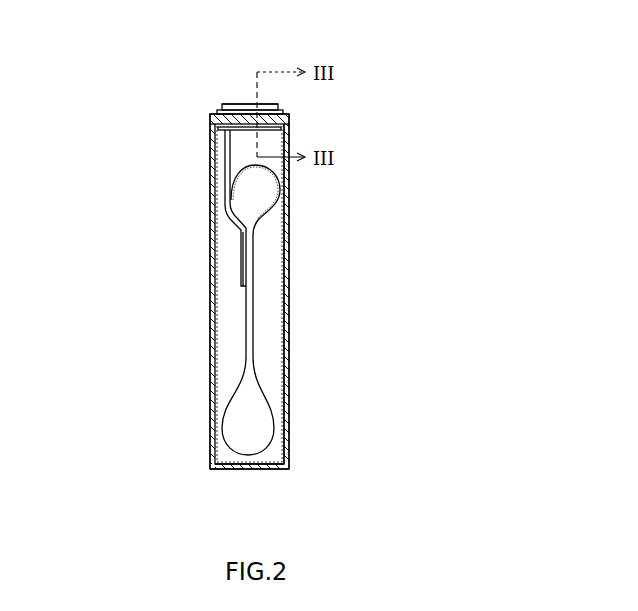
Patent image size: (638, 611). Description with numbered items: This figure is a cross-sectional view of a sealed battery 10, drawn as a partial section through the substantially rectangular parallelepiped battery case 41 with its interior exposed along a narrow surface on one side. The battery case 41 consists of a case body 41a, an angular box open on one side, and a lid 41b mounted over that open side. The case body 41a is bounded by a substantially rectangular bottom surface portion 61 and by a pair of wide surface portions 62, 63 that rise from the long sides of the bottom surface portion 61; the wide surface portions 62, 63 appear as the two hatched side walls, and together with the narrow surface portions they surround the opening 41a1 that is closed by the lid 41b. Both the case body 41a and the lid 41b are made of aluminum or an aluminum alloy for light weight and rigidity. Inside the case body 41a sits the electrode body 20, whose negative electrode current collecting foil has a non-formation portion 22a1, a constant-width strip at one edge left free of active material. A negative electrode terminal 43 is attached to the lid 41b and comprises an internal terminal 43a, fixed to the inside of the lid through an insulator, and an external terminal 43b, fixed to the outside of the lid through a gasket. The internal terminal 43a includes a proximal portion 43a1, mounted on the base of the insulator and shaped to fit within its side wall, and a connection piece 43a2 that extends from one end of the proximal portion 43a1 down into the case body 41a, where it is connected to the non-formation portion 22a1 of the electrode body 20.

The gas sensor 10 is at (355, 72).
The electrode body 20 is at (215, 387).
The non-formation portion 22a1 is at (257, 311).
The battery case 41 is at (194, 136).
The case body 41a is at (292, 190).
The opening 41a1 is at (212, 103).
The lid 41b is at (285, 108).
The negative electrode terminal 43 is at (235, 90).
The internal terminal 43a is at (232, 235).
The proximal portion 43a1 is at (284, 140).
The connection piece 43a2 is at (233, 266).
The external terminal 43b is at (214, 106).
The bottom surface portion 61 is at (250, 470).
The wide surface portion 62 is at (208, 310).
The wide surface portion 63 is at (291, 263).